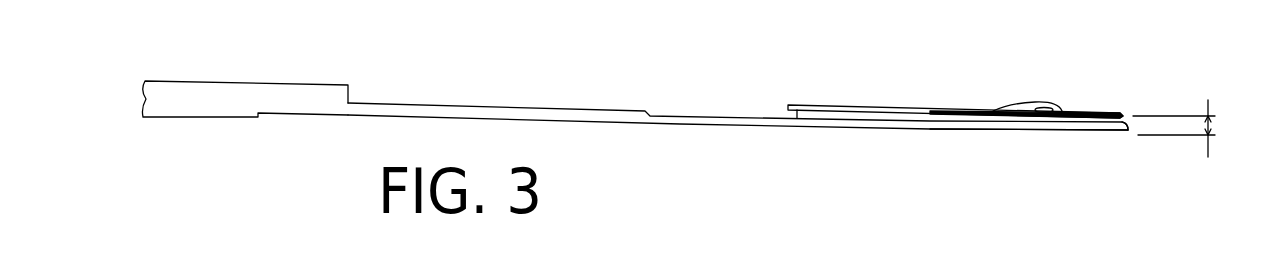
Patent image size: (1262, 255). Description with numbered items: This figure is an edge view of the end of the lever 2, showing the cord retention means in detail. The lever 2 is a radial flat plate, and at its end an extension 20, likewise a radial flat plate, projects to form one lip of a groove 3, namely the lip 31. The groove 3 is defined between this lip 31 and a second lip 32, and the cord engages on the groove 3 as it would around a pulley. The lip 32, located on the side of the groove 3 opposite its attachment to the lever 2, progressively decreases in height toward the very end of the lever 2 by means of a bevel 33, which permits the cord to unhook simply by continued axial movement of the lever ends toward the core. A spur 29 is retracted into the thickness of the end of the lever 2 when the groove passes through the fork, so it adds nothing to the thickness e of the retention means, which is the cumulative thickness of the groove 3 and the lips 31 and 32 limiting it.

The lever 2 is at (282, 95).
The extension 20 is at (733, 127).
The groove 3 is at (948, 112).
The spur 29 is at (1045, 103).
The lip 32 is at (1096, 112).
The bevel 33 is at (1125, 122).
The lip 31 is at (1092, 131).
The thickness of the retention means e is at (1187, 128).